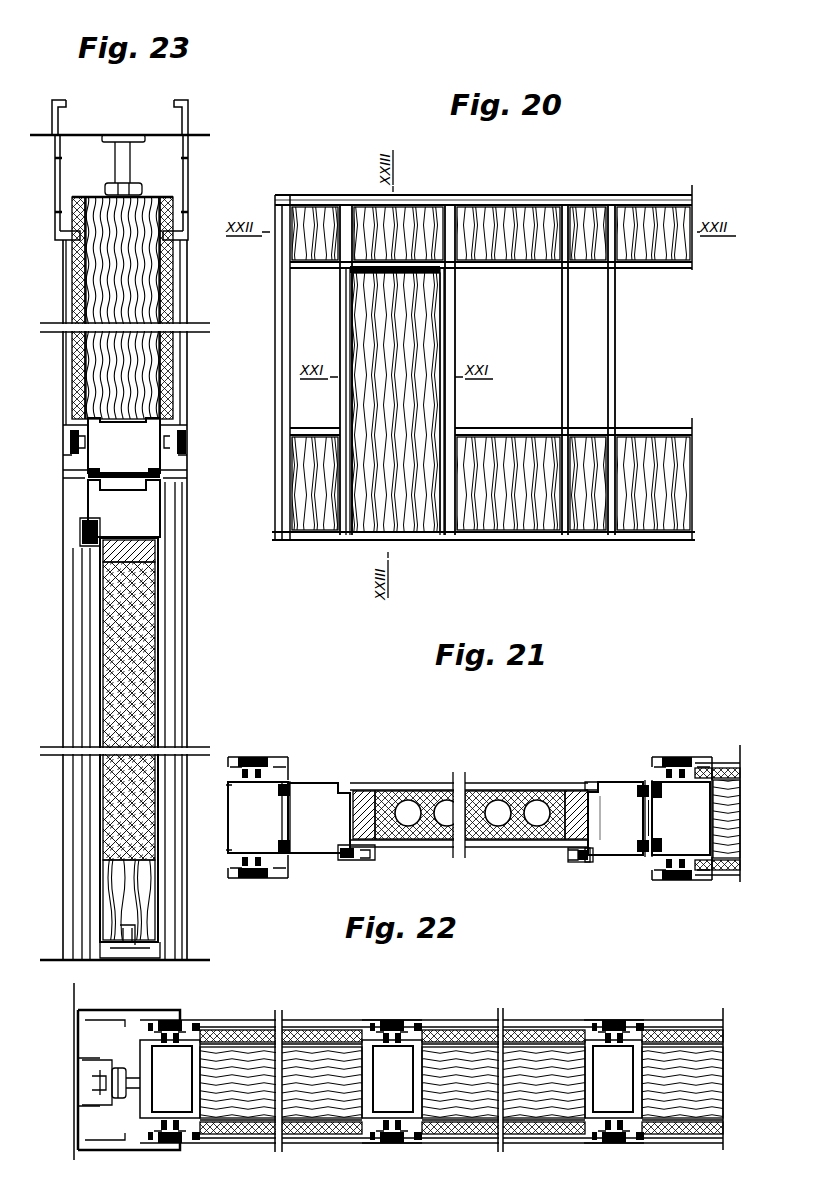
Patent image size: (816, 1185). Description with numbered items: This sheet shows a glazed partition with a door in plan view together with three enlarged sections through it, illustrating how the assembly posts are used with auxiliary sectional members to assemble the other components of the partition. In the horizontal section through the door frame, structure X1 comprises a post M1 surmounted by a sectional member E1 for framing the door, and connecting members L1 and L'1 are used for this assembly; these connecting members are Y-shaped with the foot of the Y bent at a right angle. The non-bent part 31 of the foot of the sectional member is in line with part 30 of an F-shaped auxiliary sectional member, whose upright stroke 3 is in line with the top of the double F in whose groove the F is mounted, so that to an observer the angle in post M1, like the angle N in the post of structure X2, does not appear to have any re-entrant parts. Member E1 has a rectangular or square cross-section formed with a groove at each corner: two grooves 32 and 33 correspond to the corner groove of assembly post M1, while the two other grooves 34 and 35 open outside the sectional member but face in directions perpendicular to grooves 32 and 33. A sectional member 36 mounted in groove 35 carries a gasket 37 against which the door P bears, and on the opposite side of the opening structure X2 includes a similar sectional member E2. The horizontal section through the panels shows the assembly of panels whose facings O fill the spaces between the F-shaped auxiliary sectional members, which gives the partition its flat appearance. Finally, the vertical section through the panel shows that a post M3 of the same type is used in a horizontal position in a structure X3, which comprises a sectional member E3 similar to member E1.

In FIG. 23, the post M3 is at (133, 425).
In FIG. 23, the structure X3 is at (192, 460).
In FIG. 23, the sectional member E3 is at (140, 510).
In FIG. 21, the structure X2 is at (290, 752).
In FIG. 21, the angle N is at (290, 762).
In FIG. 21, the door P is at (420, 790).
In FIG. 21, the sectional member E2 is at (320, 840).
In FIG. 21, the structure X1 is at (612, 764).
In FIG. 21, the groove 34 is at (596, 785).
In FIG. 21, the non-bent part 31 is at (644, 782).
In FIG. 21, the part 30 is at (650, 770).
In FIG. 21, the upright stroke 3 is at (660, 765).
In FIG. 21, the post M1 is at (722, 790).
In FIG. 21, the groove 32 is at (614, 818).
In FIG. 21, the connecting member L1 is at (662, 792).
In FIG. 21, the connecting member L'1 is at (676, 838).
In FIG. 21, the gasket 37 is at (568, 850).
In FIG. 21, the sectional member 36 is at (583, 860).
In FIG. 21, the sectional member E1 is at (623, 848).
In FIG. 21, the groove 35 is at (600, 862).
In FIG. 21, the groove 33 is at (644, 856).
In FIG. 22, the facings O is at (309, 1020).